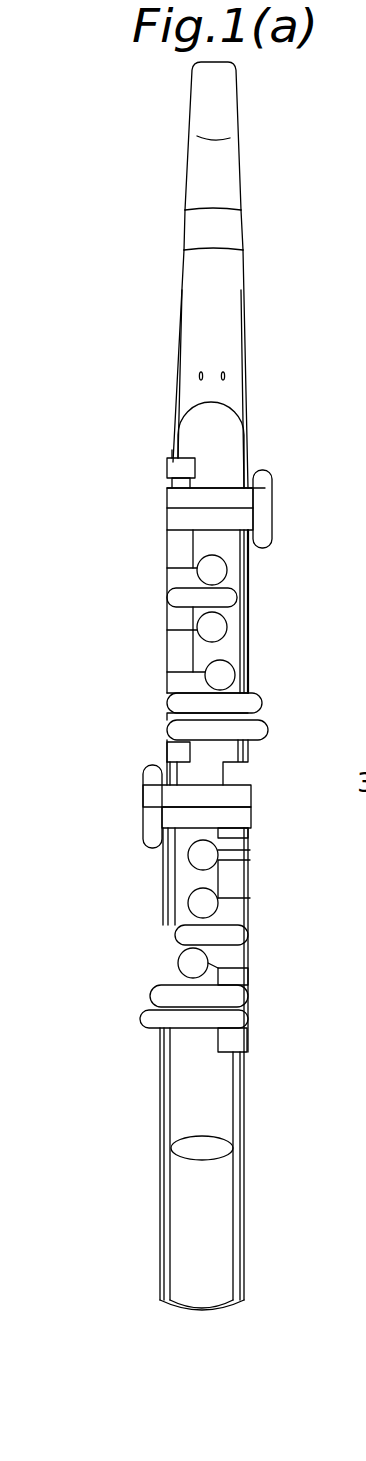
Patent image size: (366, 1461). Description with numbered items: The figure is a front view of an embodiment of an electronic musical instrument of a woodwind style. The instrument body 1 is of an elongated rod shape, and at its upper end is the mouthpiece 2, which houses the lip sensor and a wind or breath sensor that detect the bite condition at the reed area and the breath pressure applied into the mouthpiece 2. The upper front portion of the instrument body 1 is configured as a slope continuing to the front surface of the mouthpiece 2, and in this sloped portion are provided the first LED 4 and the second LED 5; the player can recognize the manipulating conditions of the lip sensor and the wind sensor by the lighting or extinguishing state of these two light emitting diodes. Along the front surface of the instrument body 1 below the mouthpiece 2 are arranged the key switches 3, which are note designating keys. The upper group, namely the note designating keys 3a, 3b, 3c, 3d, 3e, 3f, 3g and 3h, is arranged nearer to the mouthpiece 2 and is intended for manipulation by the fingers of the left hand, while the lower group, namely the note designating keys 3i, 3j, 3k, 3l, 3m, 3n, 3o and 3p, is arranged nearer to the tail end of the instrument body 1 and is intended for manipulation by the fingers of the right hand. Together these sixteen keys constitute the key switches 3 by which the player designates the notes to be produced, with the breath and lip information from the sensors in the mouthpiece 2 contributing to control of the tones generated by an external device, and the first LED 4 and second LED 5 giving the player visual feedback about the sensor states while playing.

The instrument body 1 is at (227, 312).
The mouthpiece 2 is at (220, 119).
The key switches 3 is at (145, 455).
The note designating key 3a is at (266, 480).
The note designating key 3b is at (265, 522).
The note designating key 3c is at (222, 568).
The note designating key 3d is at (233, 597).
The note designating key 3e is at (213, 630).
The note designating key 3f is at (230, 672).
The note designating key 3g is at (256, 705).
The note designating key 3h is at (266, 730).
The note designating key 3i is at (240, 797).
The note designating key 3j is at (240, 822).
The note designating key 3k is at (208, 855).
The note designating key 3l is at (205, 903).
The note designating key 3m is at (235, 937).
The note designating key 3n is at (228, 960).
The note designating key 3o is at (235, 997).
The note designating key 3p is at (233, 1022).
The first LED 4 is at (197, 376).
The second LED 5 is at (227, 376).